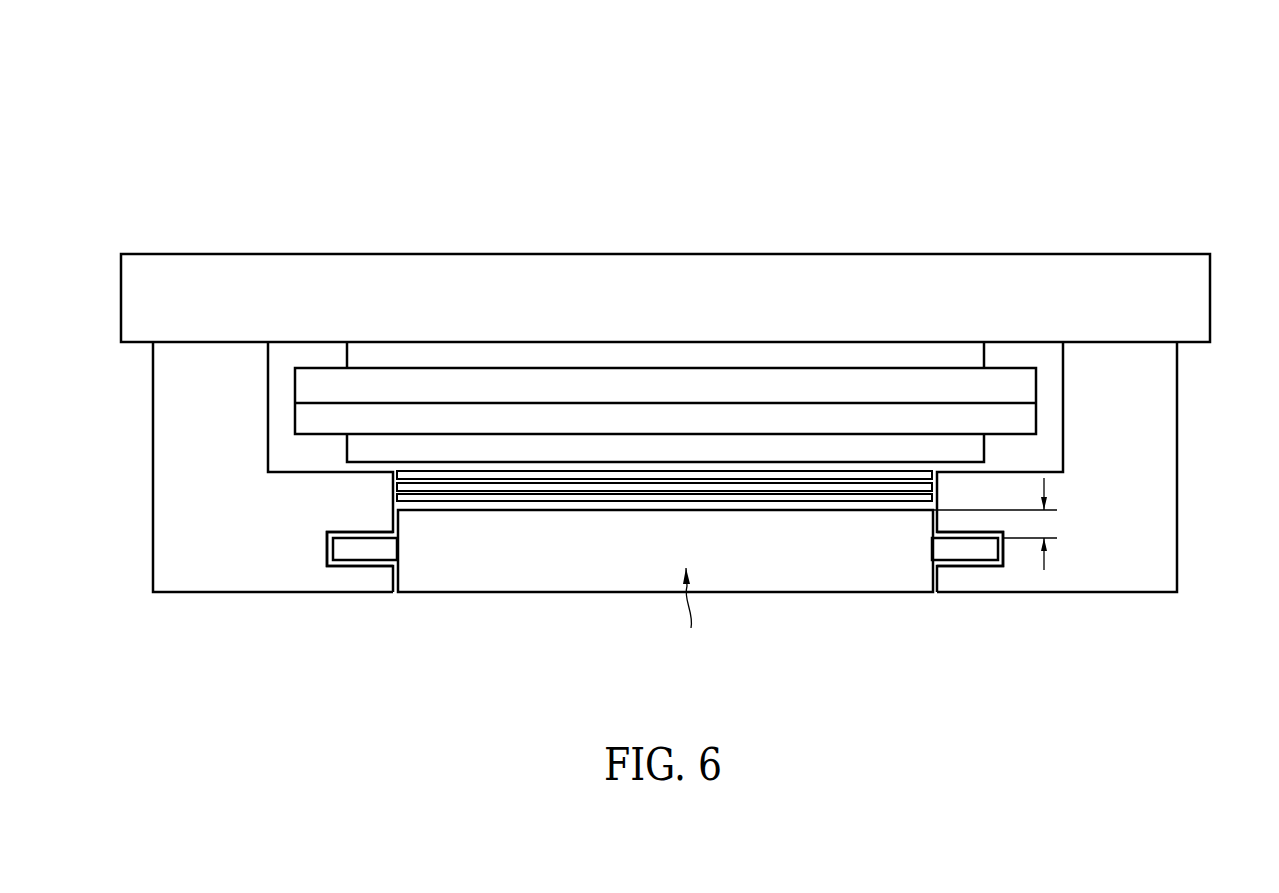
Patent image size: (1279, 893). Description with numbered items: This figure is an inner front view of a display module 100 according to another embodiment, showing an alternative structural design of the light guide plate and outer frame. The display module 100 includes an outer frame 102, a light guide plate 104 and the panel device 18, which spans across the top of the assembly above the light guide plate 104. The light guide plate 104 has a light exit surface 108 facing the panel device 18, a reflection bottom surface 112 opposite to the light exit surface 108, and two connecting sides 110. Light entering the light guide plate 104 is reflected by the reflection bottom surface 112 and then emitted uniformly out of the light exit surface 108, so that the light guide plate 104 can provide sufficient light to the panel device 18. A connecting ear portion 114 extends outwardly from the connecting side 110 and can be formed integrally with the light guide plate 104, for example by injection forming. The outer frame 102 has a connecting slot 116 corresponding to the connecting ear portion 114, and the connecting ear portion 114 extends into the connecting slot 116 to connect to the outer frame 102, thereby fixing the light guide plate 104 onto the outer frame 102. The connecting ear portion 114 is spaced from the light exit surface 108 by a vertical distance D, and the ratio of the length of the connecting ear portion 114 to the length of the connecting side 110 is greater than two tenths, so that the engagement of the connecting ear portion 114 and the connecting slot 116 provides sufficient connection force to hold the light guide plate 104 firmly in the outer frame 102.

The display module 100 is at (1170, 132).
The panel device 18 is at (1003, 268).
The outer frame 102 is at (165, 405).
The light guide plate 104 is at (687, 613).
The light exit surface 108 is at (596, 512).
The connecting side 110 is at (398, 572).
The reflection bottom surface 112 is at (793, 593).
The connecting ear portion 114 is at (367, 552).
The connecting slot 116 is at (327, 550).